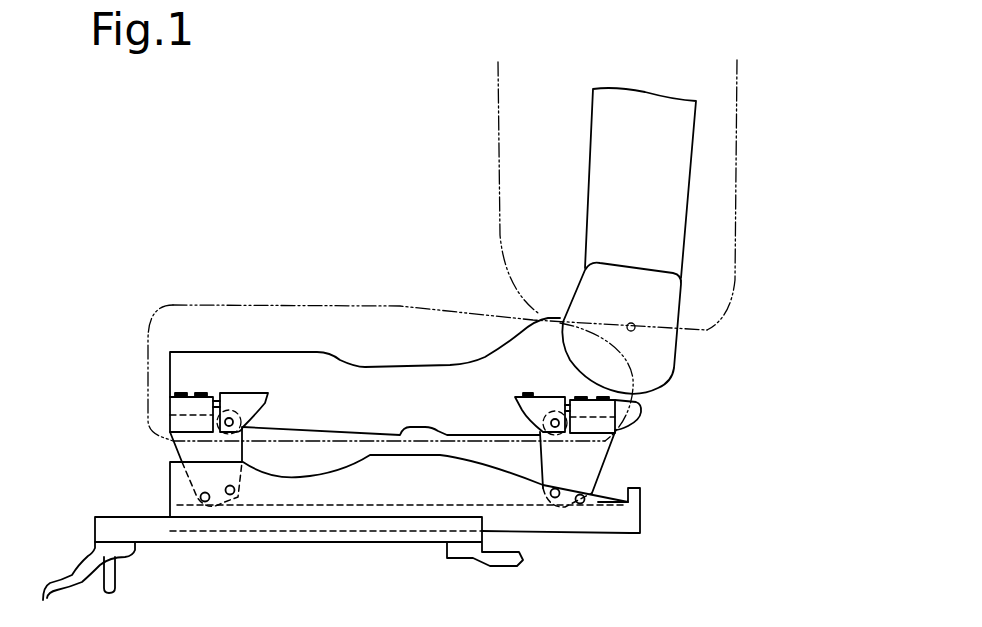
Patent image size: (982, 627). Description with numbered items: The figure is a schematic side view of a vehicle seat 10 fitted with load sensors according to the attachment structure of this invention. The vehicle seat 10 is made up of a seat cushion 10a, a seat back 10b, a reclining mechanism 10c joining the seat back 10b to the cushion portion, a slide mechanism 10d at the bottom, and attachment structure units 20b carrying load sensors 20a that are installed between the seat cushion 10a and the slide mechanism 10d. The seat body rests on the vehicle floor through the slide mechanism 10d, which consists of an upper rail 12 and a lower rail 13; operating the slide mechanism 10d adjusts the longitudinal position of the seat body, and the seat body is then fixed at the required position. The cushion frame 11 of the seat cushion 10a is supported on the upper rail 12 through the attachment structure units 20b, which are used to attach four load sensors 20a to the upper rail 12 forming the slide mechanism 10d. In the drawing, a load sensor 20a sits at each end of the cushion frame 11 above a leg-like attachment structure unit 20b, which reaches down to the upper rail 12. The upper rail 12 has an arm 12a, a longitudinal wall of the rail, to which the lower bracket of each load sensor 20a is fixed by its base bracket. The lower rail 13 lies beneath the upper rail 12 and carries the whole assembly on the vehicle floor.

The vehicle seat 10 is at (228, 157).
The seat cushion 10a is at (293, 328).
The seat back 10b is at (708, 118).
The reclining mechanism 10c is at (679, 356).
The slide mechanism 10d is at (530, 540).
The cushion frame 11 is at (395, 384).
The upper rail 12 is at (334, 503).
The arm 12a is at (598, 502).
The lower rail 13 is at (115, 527).
The load sensor 20a is at (217, 400).
The attachment structure unit 20b is at (170, 450).